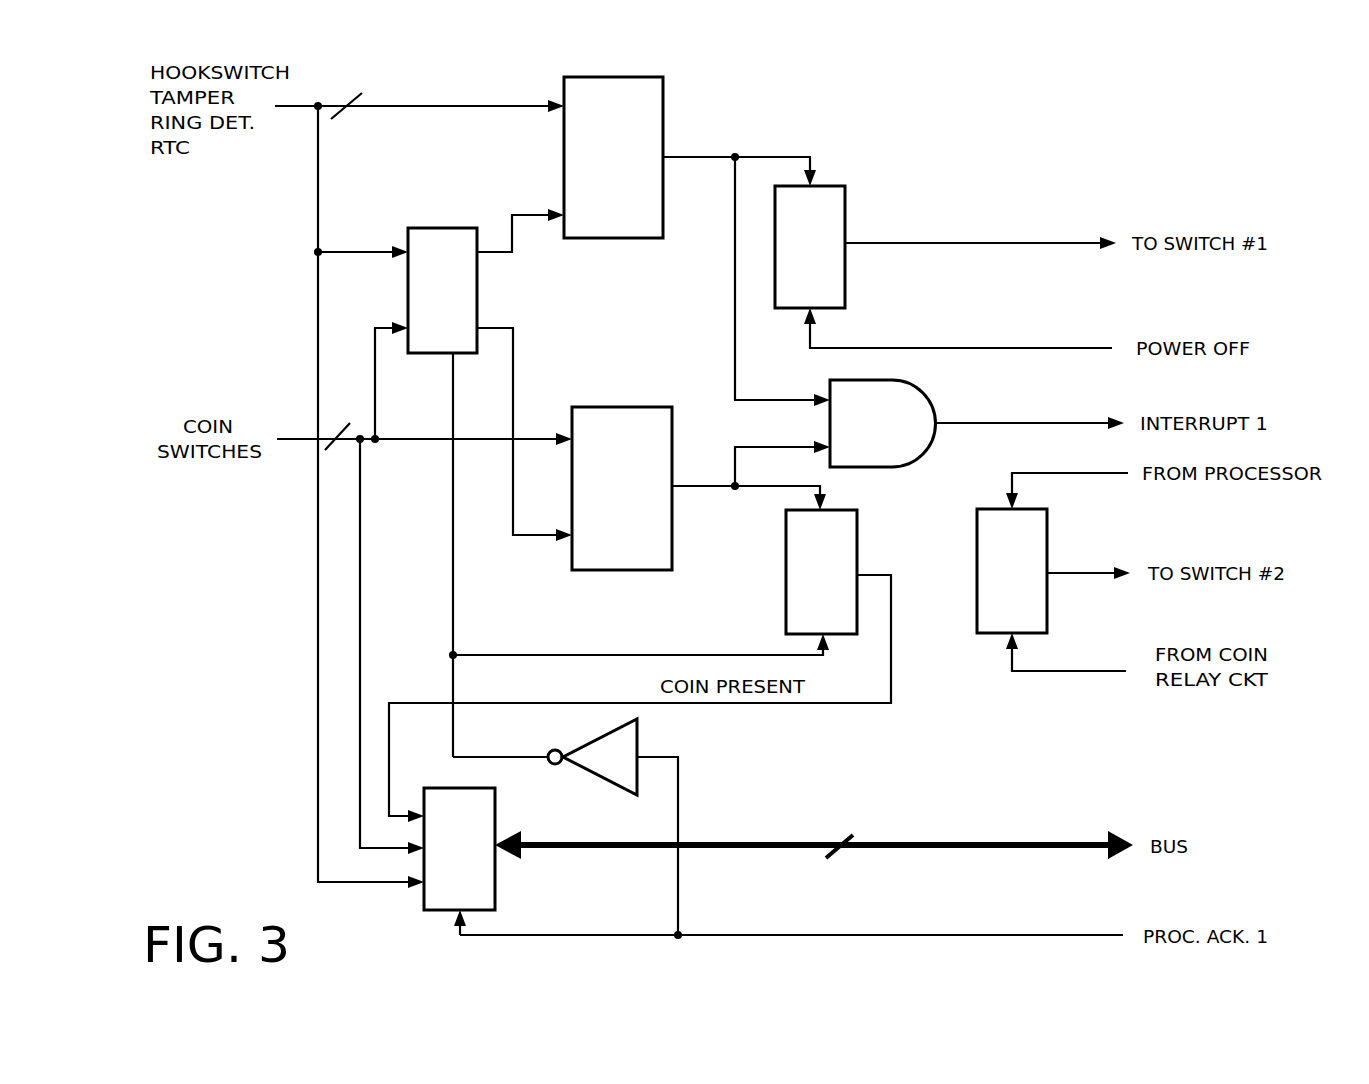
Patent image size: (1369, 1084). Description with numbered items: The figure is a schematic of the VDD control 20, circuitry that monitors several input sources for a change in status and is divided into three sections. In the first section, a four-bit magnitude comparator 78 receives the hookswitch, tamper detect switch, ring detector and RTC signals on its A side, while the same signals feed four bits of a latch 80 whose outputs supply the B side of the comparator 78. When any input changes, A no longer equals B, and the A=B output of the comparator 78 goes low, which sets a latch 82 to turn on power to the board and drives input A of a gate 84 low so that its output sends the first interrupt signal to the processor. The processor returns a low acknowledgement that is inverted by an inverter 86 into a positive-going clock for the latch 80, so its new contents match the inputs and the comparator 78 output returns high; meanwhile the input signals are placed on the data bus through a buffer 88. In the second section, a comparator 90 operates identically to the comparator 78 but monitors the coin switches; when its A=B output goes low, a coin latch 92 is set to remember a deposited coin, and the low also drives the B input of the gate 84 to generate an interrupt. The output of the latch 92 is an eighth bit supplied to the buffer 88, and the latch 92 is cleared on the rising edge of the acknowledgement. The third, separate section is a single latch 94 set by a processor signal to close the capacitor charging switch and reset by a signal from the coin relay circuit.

The VDD control 20 is at (300, 622).
The four-bit magnitude comparator 78 is at (668, 93).
The latch 80 is at (430, 226).
The latch 82 is at (848, 200).
The gate 84 is at (930, 400).
The inverter 86 is at (600, 785).
The buffer 88 is at (440, 912).
The comparator 90 is at (620, 405).
The latch 92 is at (783, 590).
The latch 94 is at (975, 617).